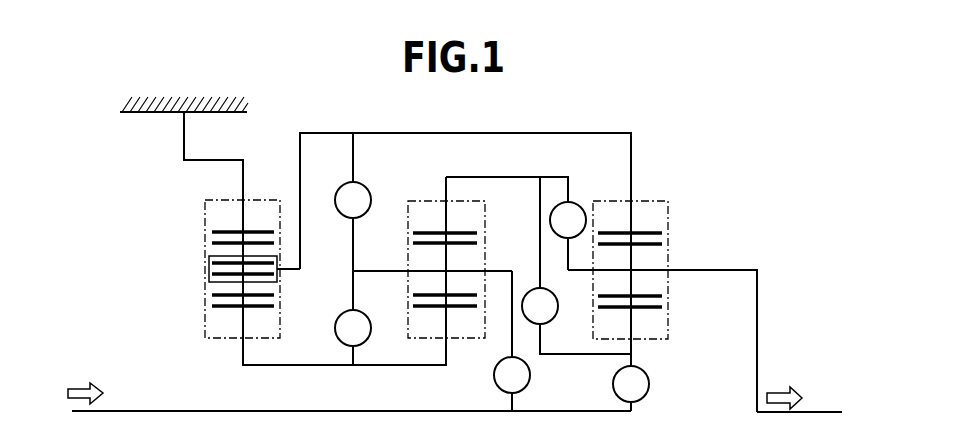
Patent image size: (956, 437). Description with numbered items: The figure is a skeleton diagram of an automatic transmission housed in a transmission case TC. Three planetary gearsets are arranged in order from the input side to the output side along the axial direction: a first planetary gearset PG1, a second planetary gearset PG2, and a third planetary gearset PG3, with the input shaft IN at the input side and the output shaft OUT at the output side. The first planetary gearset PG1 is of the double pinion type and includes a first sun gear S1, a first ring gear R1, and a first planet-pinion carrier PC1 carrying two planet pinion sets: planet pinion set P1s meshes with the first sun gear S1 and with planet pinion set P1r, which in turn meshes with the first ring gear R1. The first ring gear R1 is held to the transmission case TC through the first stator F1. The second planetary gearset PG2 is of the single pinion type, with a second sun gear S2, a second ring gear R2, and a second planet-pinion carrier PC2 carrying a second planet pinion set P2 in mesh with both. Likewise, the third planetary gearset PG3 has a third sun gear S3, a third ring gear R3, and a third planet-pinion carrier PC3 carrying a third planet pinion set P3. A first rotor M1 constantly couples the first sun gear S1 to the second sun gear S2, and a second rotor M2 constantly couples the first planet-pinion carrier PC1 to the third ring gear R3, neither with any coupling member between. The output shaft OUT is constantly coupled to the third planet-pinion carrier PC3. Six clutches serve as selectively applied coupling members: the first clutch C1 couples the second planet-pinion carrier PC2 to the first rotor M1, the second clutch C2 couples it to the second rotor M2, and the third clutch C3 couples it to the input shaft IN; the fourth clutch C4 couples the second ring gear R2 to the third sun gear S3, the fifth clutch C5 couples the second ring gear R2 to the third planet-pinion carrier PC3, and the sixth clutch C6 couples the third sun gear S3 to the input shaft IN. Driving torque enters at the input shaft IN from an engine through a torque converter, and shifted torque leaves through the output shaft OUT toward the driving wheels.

The transmission case TC is at (147, 112).
The first stator F1 is at (244, 178).
The first planetary gearset PG1 is at (221, 193).
The first ring gear R1 is at (230, 232).
The planet pinion set P1r is at (225, 243).
The first planet-pinion carrier PC1 is at (209, 260).
The planet pinion set P1s is at (228, 295).
The first sun gear S1 is at (228, 307).
The first clutch C1 is at (342, 312).
The second clutch C2 is at (341, 186).
The first rotor M1 is at (299, 366).
The second rotor M2 is at (481, 133).
The second planetary gearset PG2 is at (424, 188).
The second ring gear R2 is at (432, 233).
The second planet-pinion carrier PC2 is at (437, 270).
The second planet pinion set P2 is at (432, 295).
The second sun gear S2 is at (432, 307).
The third clutch C3 is at (494, 381).
The fourth clutch C4 is at (556, 314).
The fifth clutch C5 is at (580, 205).
The third planetary gearset PG3 is at (651, 188).
The third ring gear R3 is at (645, 233).
The third planet-pinion carrier PC3 is at (640, 270).
The third planet pinion set P3 is at (645, 296).
The third sun gear S3 is at (645, 307).
The sixth clutch C6 is at (612, 386).
The input shaft IN is at (118, 410).
The output shaft OUT is at (818, 410).